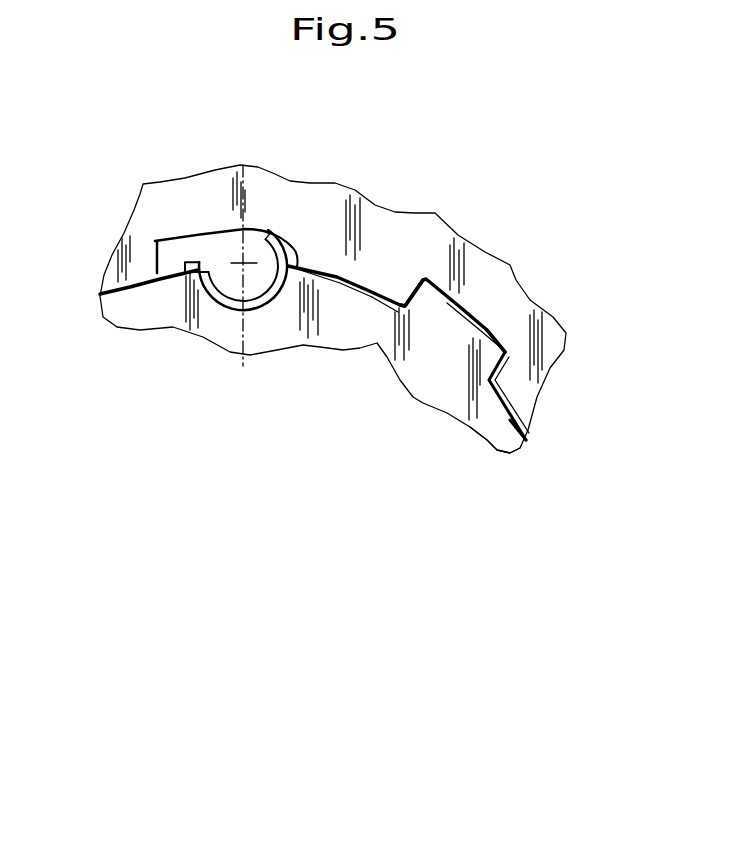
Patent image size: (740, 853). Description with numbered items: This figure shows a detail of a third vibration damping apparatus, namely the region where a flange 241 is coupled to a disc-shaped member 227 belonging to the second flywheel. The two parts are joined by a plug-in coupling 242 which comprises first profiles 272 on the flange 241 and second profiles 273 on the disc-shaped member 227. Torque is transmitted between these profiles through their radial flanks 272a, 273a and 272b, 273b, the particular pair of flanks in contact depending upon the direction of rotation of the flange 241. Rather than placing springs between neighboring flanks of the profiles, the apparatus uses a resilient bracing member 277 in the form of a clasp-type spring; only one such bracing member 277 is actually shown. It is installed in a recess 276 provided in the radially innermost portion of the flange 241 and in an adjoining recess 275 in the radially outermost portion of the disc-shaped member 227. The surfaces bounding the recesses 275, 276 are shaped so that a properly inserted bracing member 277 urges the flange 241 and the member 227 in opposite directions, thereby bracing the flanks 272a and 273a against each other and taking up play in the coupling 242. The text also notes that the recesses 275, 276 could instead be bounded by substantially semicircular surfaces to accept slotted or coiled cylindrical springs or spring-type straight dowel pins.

The flange 241 is at (503, 288).
The first profiles 272 is at (352, 275).
The second profiles 273 is at (482, 345).
The plug-in coupling 242 is at (518, 346).
The radial flank 272a is at (410, 297).
The radial flank 273a is at (446, 446).
The radial flank 272b is at (508, 355).
The radial flank 273b is at (520, 366).
The disc-shaped member 227 is at (487, 417).
The recess 275 is at (282, 282).
The recess 276 is at (197, 240).
The resilient bracing member 277 is at (208, 293).